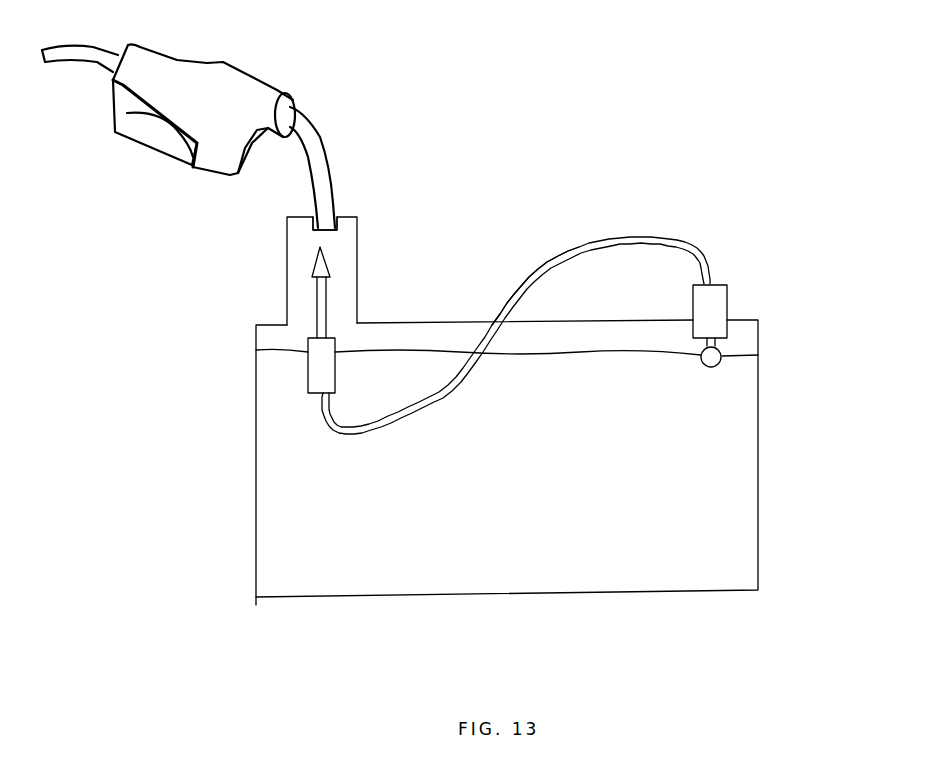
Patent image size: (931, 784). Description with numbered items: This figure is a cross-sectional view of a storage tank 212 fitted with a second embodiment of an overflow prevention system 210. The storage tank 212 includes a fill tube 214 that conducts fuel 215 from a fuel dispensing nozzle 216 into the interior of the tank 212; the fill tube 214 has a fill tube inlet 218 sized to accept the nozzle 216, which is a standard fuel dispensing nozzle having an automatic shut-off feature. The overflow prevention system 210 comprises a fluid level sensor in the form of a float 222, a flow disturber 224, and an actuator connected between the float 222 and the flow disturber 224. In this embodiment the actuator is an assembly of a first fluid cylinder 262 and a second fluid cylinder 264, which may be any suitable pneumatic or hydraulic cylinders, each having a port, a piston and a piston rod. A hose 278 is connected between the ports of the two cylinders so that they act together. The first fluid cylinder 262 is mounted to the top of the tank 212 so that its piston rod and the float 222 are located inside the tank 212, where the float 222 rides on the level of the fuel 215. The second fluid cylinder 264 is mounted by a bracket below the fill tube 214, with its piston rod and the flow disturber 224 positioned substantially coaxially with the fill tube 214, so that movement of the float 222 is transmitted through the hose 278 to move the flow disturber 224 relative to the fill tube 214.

The overflow prevention system 210 is at (547, 238).
The storage tank 212 is at (760, 423).
The fill tube 214 is at (357, 277).
The fuel 215 is at (568, 353).
The fuel dispensing nozzle 216 is at (174, 62).
The fill tube inlet 218 is at (347, 213).
The float 222 is at (707, 368).
The flow disturber 224 is at (313, 258).
The first fluid cylinder 262 is at (730, 298).
The second fluid cylinder 264 is at (308, 368).
The hose 278 is at (457, 390).